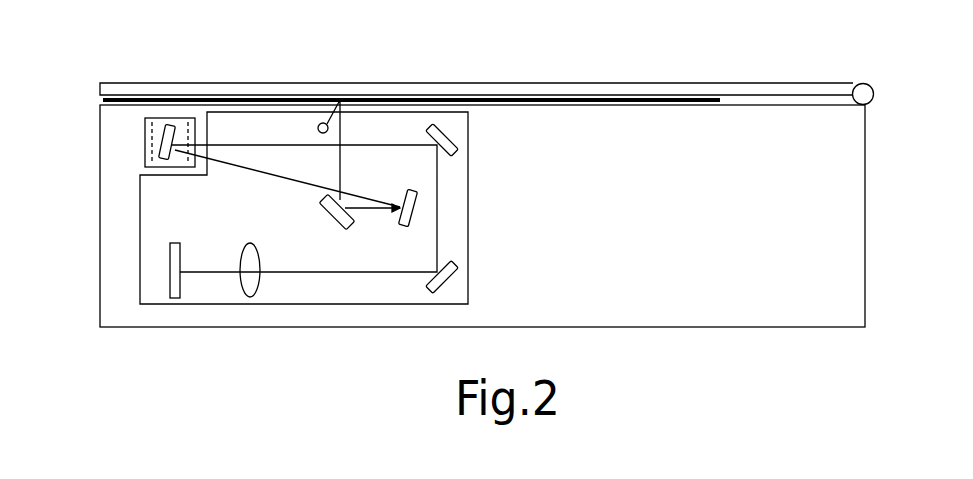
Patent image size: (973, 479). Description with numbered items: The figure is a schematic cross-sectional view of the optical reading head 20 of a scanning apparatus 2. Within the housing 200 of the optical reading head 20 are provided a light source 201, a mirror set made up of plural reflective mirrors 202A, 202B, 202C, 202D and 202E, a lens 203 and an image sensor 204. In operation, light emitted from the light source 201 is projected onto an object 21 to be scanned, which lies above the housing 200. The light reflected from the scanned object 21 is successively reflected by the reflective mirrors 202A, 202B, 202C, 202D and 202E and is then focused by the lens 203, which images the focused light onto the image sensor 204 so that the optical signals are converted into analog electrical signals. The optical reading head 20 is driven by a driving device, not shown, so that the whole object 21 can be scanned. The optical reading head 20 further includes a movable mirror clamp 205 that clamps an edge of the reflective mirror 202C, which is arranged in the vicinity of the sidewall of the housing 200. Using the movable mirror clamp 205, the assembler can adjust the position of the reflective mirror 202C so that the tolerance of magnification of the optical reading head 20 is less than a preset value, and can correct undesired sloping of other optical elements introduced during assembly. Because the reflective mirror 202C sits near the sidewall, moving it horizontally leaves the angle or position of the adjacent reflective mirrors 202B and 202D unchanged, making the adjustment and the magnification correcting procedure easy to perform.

The scanning apparatus 2 is at (521, 185).
The optical reading head 20 is at (579, 199).
The object 21 is at (648, 96).
The housing 200 is at (468, 207).
The light source 201 is at (318, 123).
The reflective mirror 202A is at (327, 212).
The reflective mirror 202B is at (402, 222).
The reflective mirror 202C is at (172, 156).
The reflective mirror 202D is at (442, 128).
The reflective mirror 202E is at (446, 291).
The lens 203 is at (253, 240).
The image sensor 204 is at (175, 242).
The movable mirror clamp 205 is at (160, 117).